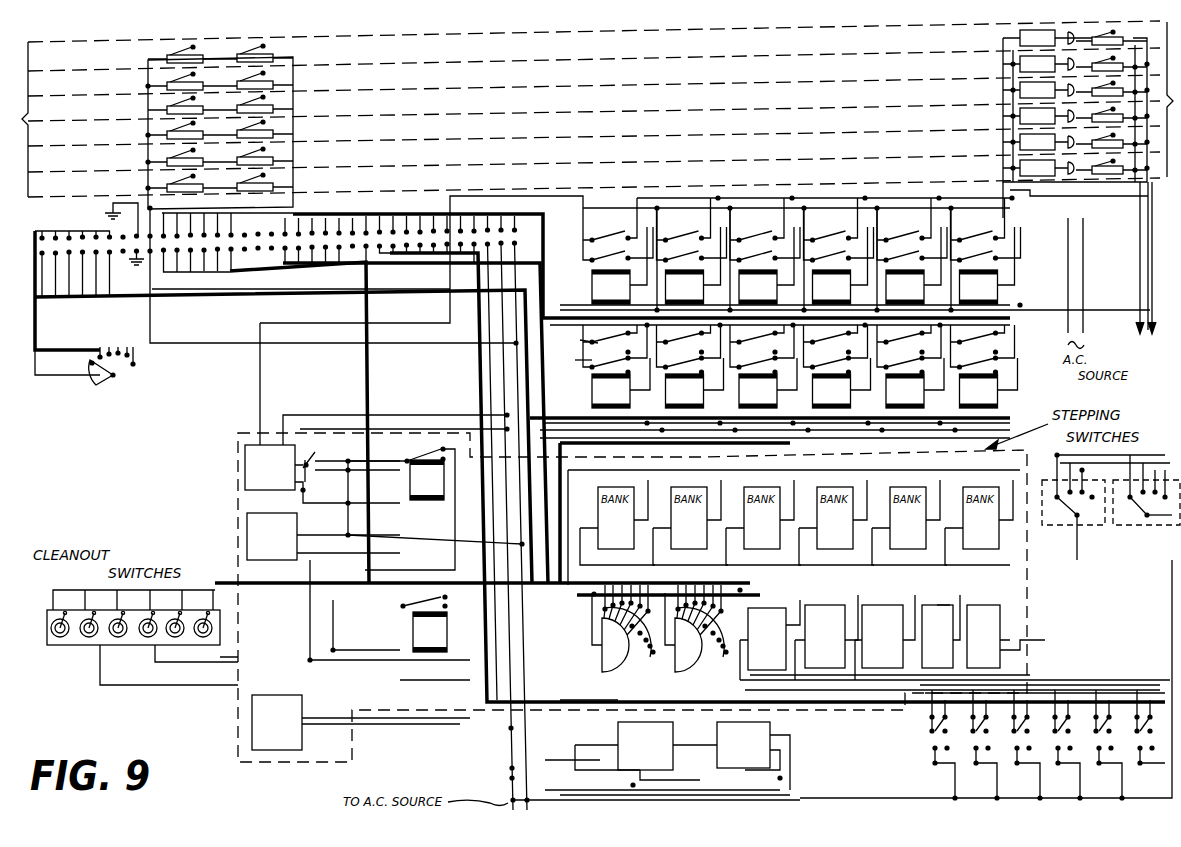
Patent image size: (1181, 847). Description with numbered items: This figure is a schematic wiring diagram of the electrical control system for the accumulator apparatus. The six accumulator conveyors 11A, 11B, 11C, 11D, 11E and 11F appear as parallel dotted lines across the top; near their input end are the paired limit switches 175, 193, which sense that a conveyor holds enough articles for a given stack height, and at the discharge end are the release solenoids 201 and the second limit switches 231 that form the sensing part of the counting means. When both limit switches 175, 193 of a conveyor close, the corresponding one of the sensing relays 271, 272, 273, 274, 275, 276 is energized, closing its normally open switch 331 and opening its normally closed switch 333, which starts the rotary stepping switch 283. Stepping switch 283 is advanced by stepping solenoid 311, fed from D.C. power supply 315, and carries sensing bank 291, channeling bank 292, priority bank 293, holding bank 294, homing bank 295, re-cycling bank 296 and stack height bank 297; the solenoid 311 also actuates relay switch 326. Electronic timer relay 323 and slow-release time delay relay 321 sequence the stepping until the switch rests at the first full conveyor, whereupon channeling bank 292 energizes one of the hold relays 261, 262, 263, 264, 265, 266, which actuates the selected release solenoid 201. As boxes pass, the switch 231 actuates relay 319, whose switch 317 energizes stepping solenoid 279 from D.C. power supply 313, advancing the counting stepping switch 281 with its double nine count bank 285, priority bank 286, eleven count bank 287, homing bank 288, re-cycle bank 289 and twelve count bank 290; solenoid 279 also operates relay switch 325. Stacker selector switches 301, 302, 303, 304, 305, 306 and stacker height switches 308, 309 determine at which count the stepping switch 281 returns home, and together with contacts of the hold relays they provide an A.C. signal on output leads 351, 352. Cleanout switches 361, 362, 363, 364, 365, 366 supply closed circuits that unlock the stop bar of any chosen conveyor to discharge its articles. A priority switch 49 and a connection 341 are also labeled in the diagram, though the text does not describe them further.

The accumulator conveyor 11A is at (594, 37).
The accumulator conveyor 11B is at (594, 63).
The accumulator conveyor 11C is at (594, 89).
The accumulator conveyor 11D is at (594, 115).
The accumulator conveyor 11E is at (594, 140).
The accumulator conveyor 11F is at (594, 165).
The priority switch 49 is at (89, 387).
The limit-switch 175 is at (167, 184).
The limit-switch 193 is at (271, 188).
The release solenoid 201 is at (1020, 166).
The second limit-switch 231 is at (1112, 174).
The hold relay 261 is at (618, 251).
The hold relay 262 is at (692, 251).
The hold relay 263 is at (765, 251).
The hold relay 264 is at (839, 251).
The hold relay 265 is at (912, 251).
The hold relay 266 is at (986, 251).
The sensing relay 271 is at (616, 366).
The sensing relay 272 is at (690, 366).
The sensing relay 273 is at (763, 366).
The sensing relay 274 is at (837, 366).
The sensing relay 275 is at (910, 366).
The sensing relay 276 is at (984, 366).
The stepping solenoid 279 is at (427, 480).
The rotary stepping switch 281 is at (712, 496).
The rotary stepping switch 283 is at (936, 606).
The double nine count bank 285 is at (617, 526).
The priority bank 286 is at (690, 526).
The eleven count bank 287 is at (763, 526).
The homing bank 288 is at (836, 526).
The re-cycle bank 289 is at (909, 526).
The twelve count bank 290 is at (979, 522).
The sensing bank 291 is at (617, 652).
The channeling bank 292 is at (690, 652).
The priority bank 293 is at (770, 640).
The holding bank 294 is at (826, 637).
The homing bank 295 is at (885, 637).
The re-cycling bank 296 is at (941, 631).
The stack height bank 297 is at (1006, 636).
The stacker selector switch 301 is at (918, 742).
The stacker selector switch 302 is at (945, 757).
The stacker selector switch 303 is at (976, 752).
The stacker selector switch 304 is at (1017, 752).
The stacker selector switch 305 is at (1058, 752).
The stacker selector switch 306 is at (1099, 752).
The stacker height switch 308 is at (1060, 528).
The stacker height switch 309 is at (1145, 528).
The stepping solenoid 311 is at (440, 628).
The D.C. power supply 313 is at (247, 525).
The D.C. power supply 315 is at (252, 700).
The switch 317 is at (318, 458).
The relay 319 is at (270, 467).
The time delay relay 321 is at (630, 740).
The electronic timer relay 323 is at (731, 756).
The relay switch 325 is at (432, 452).
The relay switch 326 is at (410, 598).
The normally open switch 331 is at (604, 364).
The normally closed switch 333 is at (604, 341).
The bus 341 is at (570, 463).
The output lead 351 is at (1138, 320).
The output lead 352 is at (1148, 252).
The cleanout switch 361 is at (64, 640).
The cleanout switch 362 is at (90, 640).
The cleanout switch 363 is at (122, 640).
The cleanout switch 364 is at (150, 640).
The cleanout switch 365 is at (178, 640).
The cleanout switch 366 is at (222, 625).